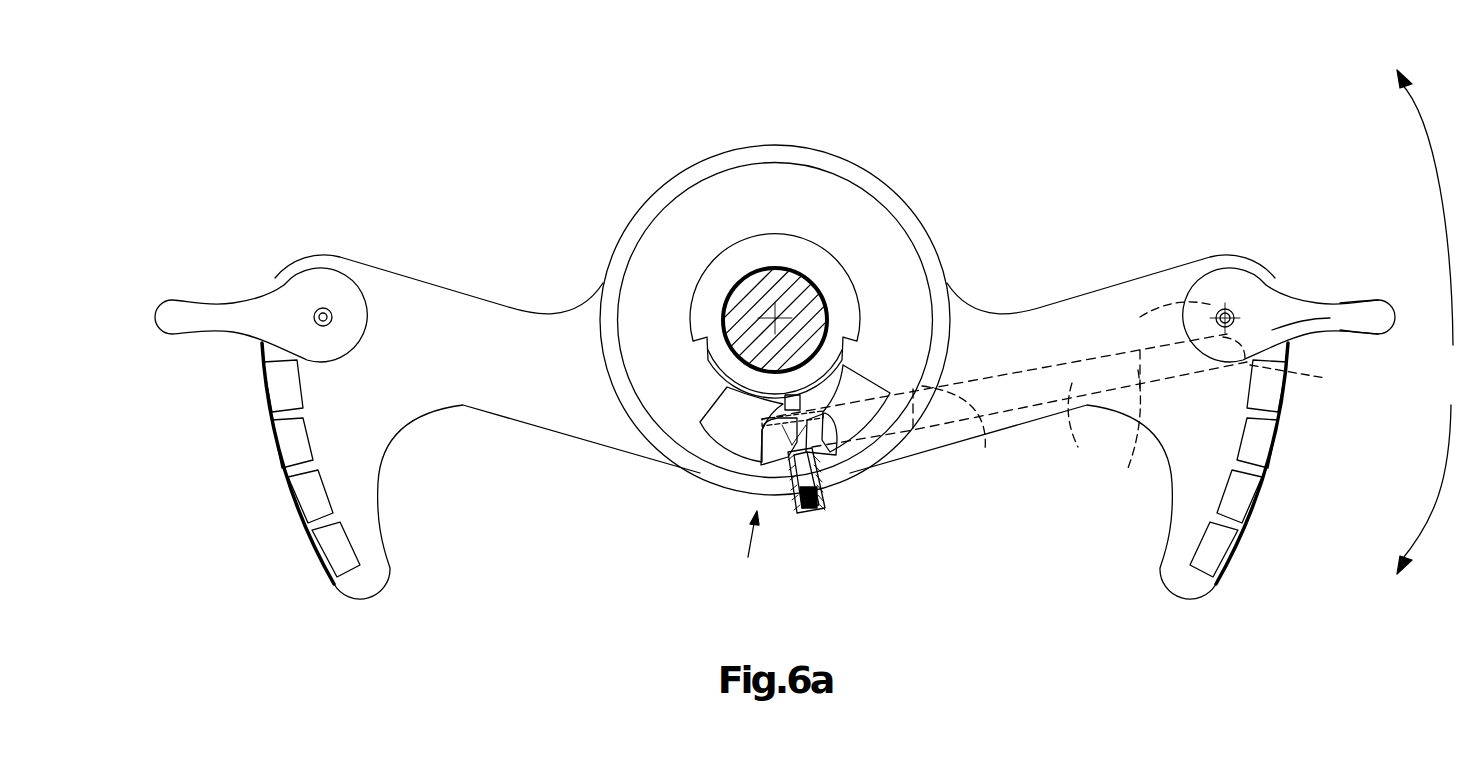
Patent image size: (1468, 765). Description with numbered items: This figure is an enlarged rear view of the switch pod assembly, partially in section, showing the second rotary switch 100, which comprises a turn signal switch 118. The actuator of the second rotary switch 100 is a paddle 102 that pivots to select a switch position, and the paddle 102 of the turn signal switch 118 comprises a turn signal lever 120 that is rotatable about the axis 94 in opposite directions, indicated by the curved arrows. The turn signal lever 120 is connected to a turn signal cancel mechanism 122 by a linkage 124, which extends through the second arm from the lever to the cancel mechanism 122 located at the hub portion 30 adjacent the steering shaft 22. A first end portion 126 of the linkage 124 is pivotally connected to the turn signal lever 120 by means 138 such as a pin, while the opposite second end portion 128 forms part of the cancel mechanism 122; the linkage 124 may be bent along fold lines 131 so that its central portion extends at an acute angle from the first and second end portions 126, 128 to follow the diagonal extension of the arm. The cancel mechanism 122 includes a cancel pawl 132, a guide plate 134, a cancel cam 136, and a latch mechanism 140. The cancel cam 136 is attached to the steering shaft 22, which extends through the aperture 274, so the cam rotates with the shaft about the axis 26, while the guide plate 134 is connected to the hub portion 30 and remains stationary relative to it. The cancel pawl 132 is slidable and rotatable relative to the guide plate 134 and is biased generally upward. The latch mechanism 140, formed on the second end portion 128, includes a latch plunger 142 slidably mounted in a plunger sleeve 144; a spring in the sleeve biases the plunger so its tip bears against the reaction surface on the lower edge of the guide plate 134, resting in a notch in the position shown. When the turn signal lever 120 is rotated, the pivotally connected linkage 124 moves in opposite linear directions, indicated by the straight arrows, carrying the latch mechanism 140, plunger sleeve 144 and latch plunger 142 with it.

The steering shaft 22 is at (826, 299).
The axis 26 is at (796, 296).
The hub portion 30 is at (656, 202).
The axis 94 is at (1173, 330).
The second rotary switch 100 is at (1258, 310).
The paddle 102 is at (1300, 320).
The turn signal switch 118 is at (1347, 318).
The turn signal lever 120 is at (1223, 290).
The turn signal cancel mechanism 122 is at (633, 496).
The linkage 124 is at (1073, 428).
The first end portion 126 is at (1172, 370).
The second end portion 128 is at (880, 413).
The fold lines 131 is at (1035, 433).
The cancel pawl 132 is at (763, 447).
The guide plate 134 is at (735, 416).
The cancel cam 136 is at (827, 273).
The means such as a pin 138 is at (1308, 378).
The latch mechanism 140 is at (740, 551).
The latch plunger 142 is at (822, 478).
The plunger sleeve 144 is at (812, 513).
The aperture 274 is at (778, 310).